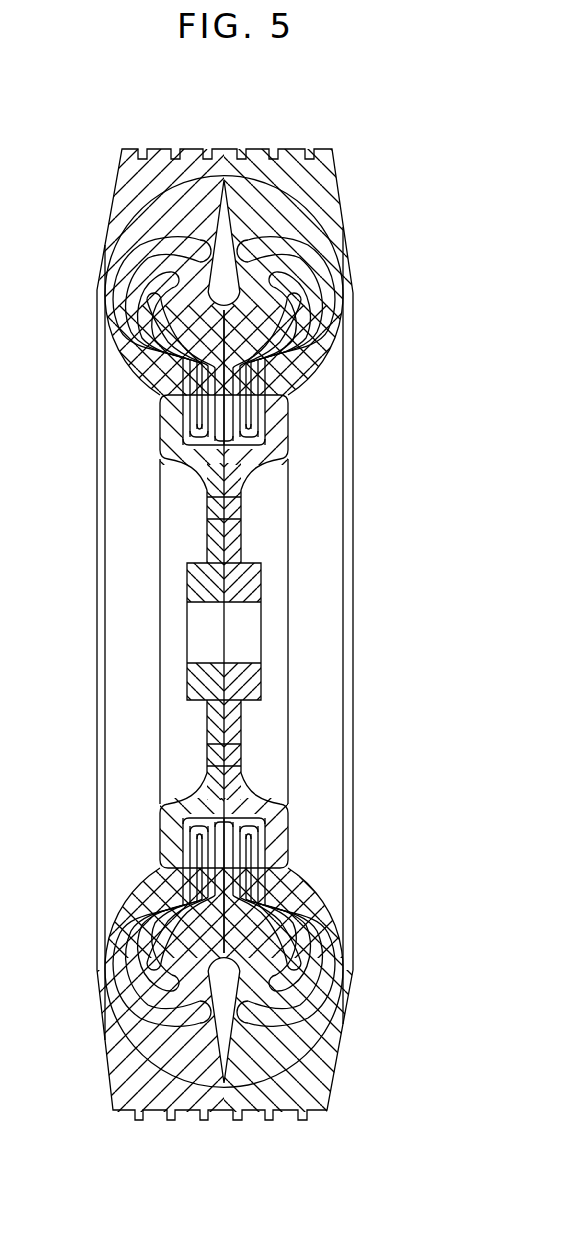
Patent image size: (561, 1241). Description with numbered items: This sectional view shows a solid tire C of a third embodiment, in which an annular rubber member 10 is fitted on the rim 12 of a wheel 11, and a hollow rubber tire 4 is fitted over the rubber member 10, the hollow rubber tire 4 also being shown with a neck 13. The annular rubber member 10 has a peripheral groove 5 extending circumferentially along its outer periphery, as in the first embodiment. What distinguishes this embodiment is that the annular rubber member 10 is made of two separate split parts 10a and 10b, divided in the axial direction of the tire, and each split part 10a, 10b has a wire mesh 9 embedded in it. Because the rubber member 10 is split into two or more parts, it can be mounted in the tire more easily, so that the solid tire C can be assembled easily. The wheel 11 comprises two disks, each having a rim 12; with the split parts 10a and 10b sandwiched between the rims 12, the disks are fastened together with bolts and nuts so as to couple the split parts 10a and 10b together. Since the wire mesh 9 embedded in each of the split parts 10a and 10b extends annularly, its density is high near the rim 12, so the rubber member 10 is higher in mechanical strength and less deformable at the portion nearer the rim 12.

The hollow rubber tire 4 is at (193, 140).
The peripheral groove 5 is at (234, 227).
The wire mesh 9 is at (310, 334).
The annular rubber member 10 is at (252, 190).
The split part 10a is at (288, 202).
The split part 10b is at (162, 207).
The wheel 11 is at (243, 583).
The rim 12 is at (247, 466).
The neck 13 is at (232, 508).
The solid tire C is at (102, 237).